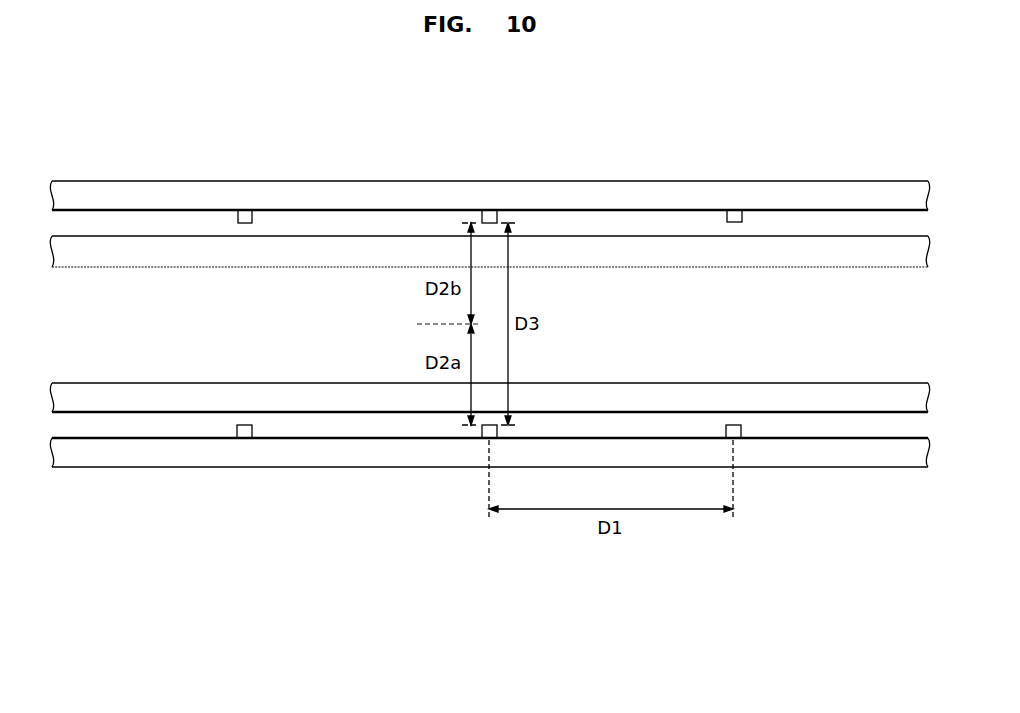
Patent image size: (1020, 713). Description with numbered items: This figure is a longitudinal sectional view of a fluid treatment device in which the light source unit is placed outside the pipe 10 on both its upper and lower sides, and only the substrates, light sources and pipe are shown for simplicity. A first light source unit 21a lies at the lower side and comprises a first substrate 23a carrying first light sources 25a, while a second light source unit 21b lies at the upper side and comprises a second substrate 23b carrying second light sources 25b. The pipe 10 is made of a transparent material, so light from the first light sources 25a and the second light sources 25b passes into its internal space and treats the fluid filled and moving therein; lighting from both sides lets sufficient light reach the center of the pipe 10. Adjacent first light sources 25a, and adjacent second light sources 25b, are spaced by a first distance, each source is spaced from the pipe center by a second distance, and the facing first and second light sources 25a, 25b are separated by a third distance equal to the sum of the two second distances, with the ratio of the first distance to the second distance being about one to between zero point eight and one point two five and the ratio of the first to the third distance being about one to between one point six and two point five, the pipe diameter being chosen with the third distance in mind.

The pipe 10 is at (146, 260).
The second light source unit 21b is at (489, 151).
The second substrate 23b is at (183, 190).
The second light source 25b is at (489, 173).
The first light source unit 21a is at (489, 501).
The first substrate 23a is at (180, 458).
The first light source 25a is at (243, 438).